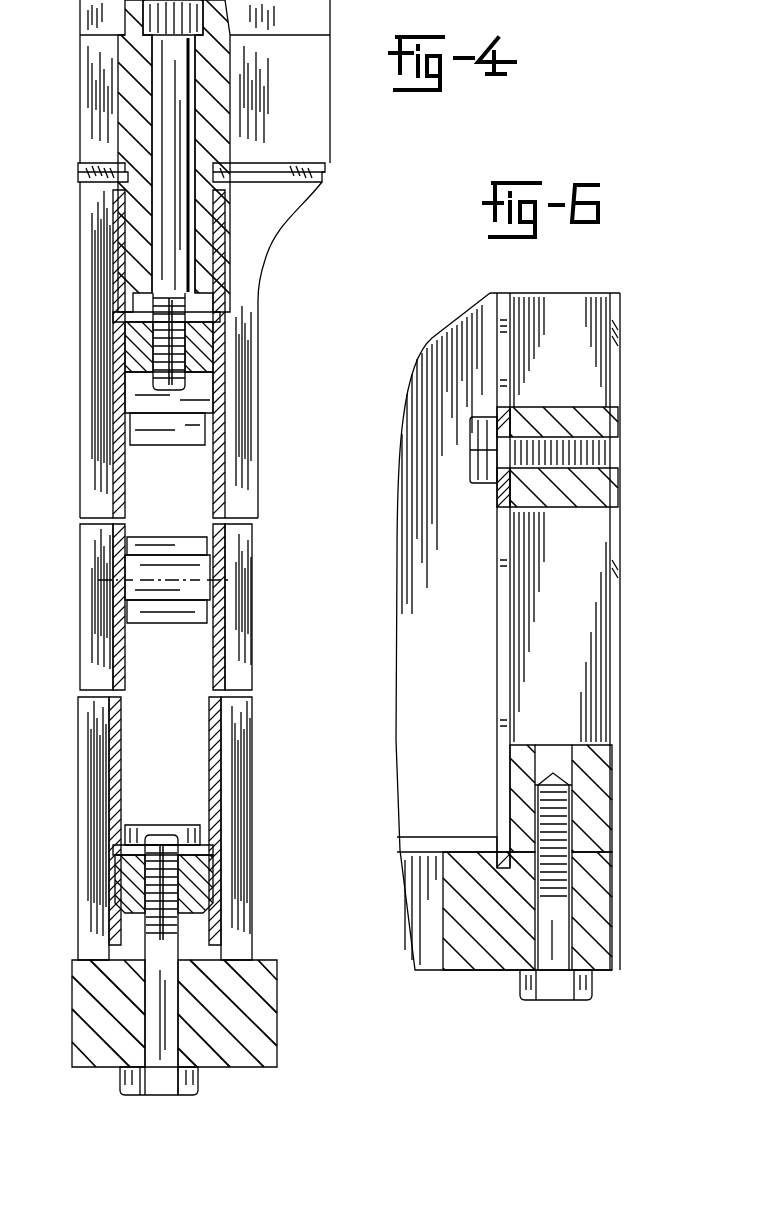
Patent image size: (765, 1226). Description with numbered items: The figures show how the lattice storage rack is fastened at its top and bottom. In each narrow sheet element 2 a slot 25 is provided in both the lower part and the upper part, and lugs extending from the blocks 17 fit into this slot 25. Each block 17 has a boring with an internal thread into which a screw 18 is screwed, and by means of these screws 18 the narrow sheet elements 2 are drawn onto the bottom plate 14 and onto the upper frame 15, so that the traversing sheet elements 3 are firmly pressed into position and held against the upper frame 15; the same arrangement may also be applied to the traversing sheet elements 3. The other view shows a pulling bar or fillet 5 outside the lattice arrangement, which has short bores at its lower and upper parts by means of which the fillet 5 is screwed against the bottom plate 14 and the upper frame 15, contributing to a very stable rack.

In FIG. 4, the narrow sheet element 2 is at (112, 730).
In FIG. 6, the narrow sheet element 2 is at (410, 740).
In FIG. 4, the traversing sheet element 3 is at (100, 658).
In FIG. 6, the pulling bar or fillet 5 is at (600, 790).
In FIG. 4, the bottom plate 14 is at (90, 975).
In FIG. 6, the bottom plate 14 is at (596, 903).
In FIG. 4, the upper frame 15 is at (135, 135).
In FIG. 4, the block 17 is at (118, 355).
In FIG. 4, the screw 18 is at (170, 90).
In FIG. 4, the slot 25 is at (120, 318).